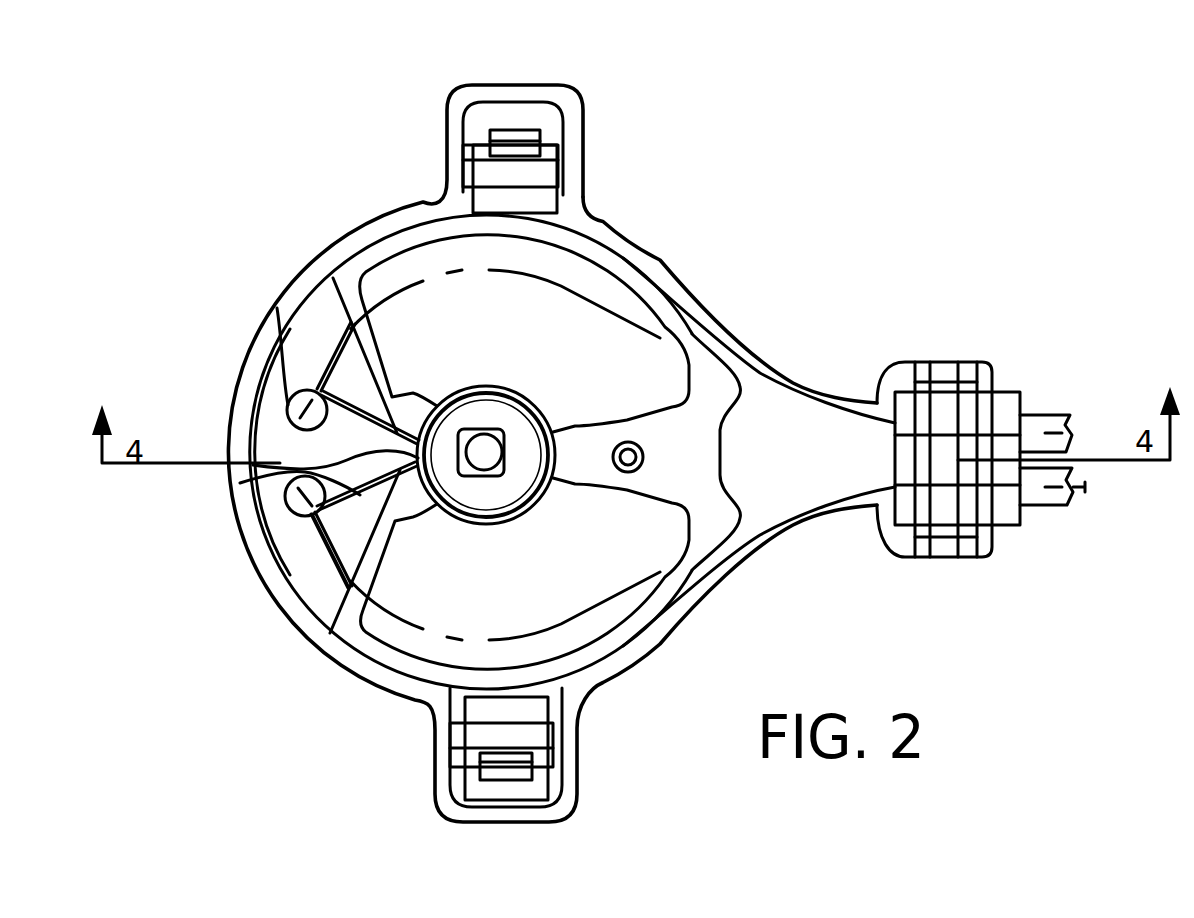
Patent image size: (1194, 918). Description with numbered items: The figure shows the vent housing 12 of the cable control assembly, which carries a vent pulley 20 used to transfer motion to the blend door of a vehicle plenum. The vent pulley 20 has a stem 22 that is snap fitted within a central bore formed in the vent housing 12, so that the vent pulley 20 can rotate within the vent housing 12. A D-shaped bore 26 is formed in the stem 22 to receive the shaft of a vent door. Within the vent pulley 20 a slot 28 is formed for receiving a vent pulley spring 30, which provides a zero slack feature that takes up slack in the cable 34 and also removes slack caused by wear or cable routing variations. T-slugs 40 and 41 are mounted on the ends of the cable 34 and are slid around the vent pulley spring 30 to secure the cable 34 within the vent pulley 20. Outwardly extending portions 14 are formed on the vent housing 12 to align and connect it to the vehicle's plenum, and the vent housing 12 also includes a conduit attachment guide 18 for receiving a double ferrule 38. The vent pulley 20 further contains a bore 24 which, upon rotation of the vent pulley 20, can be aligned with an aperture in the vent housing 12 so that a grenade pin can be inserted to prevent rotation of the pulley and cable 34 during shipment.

The vent housing 12 is at (697, 172).
The outwardly extending portions 14 is at (580, 110).
The conduit attachment guide 18 is at (943, 533).
The vent pulley 20 is at (622, 605).
The stem 22 is at (453, 430).
The bore 24 is at (643, 452).
The D-shaped bore 26 is at (478, 452).
The slot 28 is at (507, 517).
The vent pulley spring 30 is at (290, 479).
The cable 34 is at (320, 612).
The double ferrule 38 is at (940, 462).
The T-slug 40 is at (278, 312).
The T-slug 41 is at (292, 515).